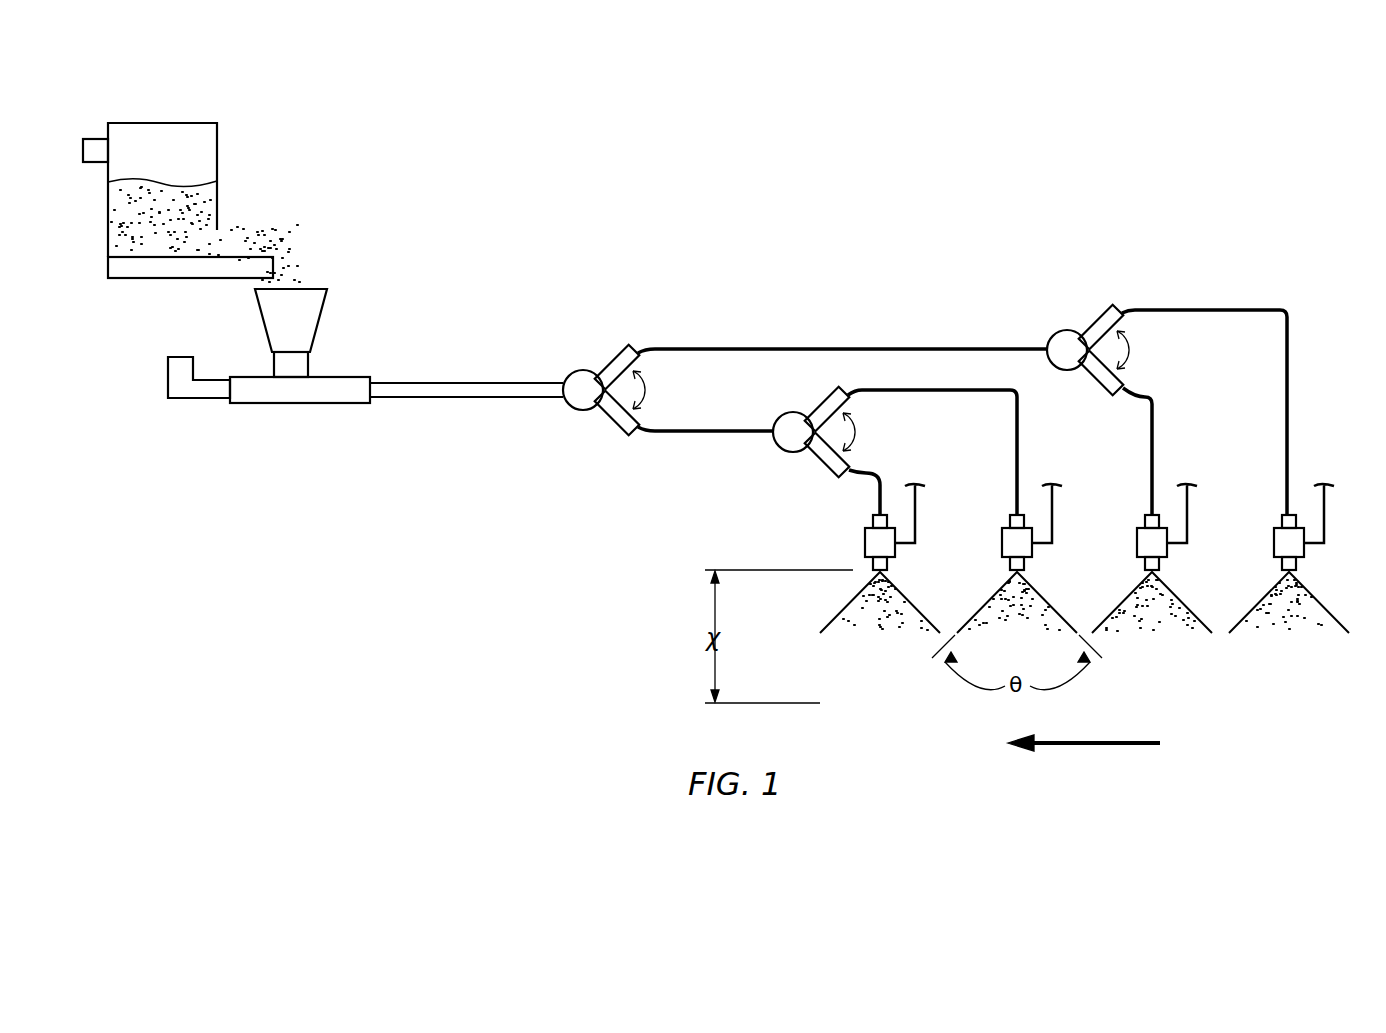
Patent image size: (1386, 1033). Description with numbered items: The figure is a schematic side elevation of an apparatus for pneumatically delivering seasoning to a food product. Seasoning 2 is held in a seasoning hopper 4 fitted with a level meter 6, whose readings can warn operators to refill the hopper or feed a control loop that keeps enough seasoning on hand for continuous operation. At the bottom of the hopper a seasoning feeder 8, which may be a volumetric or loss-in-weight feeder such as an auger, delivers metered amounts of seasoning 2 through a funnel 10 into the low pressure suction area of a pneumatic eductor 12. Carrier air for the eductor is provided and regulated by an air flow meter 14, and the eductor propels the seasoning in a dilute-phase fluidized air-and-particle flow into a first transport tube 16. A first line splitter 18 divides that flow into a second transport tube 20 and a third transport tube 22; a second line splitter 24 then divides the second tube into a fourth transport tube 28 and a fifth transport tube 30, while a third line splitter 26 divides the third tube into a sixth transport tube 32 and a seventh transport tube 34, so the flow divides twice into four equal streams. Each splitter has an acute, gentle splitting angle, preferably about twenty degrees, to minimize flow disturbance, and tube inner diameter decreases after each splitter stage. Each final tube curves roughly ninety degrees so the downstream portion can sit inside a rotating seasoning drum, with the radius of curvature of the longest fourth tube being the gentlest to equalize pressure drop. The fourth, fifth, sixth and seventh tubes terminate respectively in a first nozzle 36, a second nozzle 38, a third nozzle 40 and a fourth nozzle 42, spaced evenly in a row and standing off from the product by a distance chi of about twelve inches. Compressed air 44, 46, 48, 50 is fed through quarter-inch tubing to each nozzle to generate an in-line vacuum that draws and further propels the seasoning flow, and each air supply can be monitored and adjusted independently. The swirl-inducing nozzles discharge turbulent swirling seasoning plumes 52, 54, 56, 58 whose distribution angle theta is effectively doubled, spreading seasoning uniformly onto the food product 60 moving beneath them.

The seasoning 2 is at (205, 206).
The seasoning hopper 4 is at (217, 160).
The level meter 6 is at (92, 139).
The seasoning feeder 8 is at (170, 279).
The funnel 10 is at (320, 318).
The pneumatic eductor 12 is at (253, 404).
The air flow meter 14 is at (168, 368).
The first transport tube 16 is at (466, 382).
The first line splitter 18 is at (581, 371).
The second transport tube 20 is at (721, 348).
The third transport tube 22 is at (696, 433).
The second line splitter 24 is at (1061, 331).
The third line splitter 26 is at (791, 453).
The fourth transport tube 28 is at (1213, 308).
The fifth transport tube 30 is at (1156, 414).
The sixth transport tube 32 is at (1021, 430).
The seventh transport tube 34 is at (877, 497).
The first nozzle 36 is at (1273, 548).
The second nozzle 38 is at (1136, 548).
The third nozzle 40 is at (1001, 548).
The fourth nozzle 42 is at (864, 541).
The compressed air 44 is at (1329, 514).
The compressed air 46 is at (1192, 514).
The compressed air 48 is at (1056, 514).
The compressed air 50 is at (919, 514).
The seasoning plume 52 is at (1322, 607).
The seasoning plume 54 is at (1185, 607).
The seasoning plume 56 is at (1040, 606).
The seasoning plume 58 is at (913, 607).
The food product 60 is at (1108, 746).